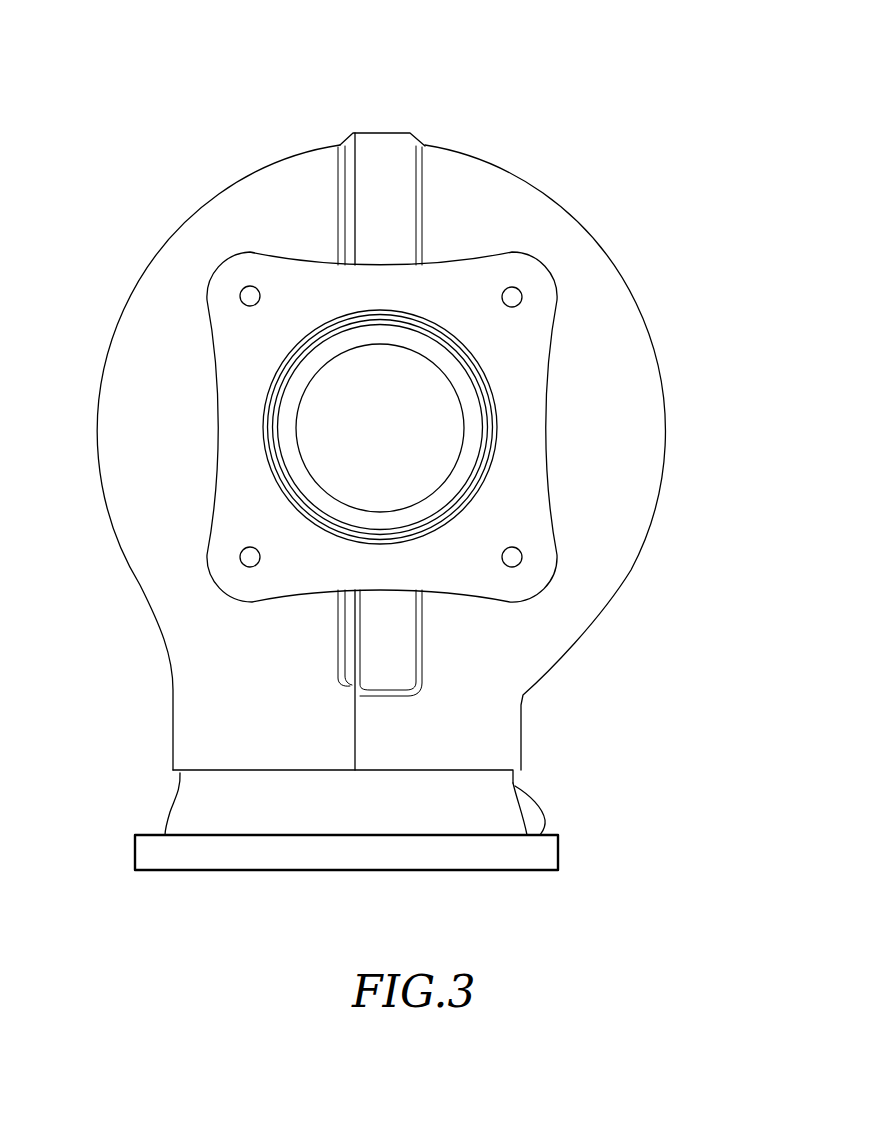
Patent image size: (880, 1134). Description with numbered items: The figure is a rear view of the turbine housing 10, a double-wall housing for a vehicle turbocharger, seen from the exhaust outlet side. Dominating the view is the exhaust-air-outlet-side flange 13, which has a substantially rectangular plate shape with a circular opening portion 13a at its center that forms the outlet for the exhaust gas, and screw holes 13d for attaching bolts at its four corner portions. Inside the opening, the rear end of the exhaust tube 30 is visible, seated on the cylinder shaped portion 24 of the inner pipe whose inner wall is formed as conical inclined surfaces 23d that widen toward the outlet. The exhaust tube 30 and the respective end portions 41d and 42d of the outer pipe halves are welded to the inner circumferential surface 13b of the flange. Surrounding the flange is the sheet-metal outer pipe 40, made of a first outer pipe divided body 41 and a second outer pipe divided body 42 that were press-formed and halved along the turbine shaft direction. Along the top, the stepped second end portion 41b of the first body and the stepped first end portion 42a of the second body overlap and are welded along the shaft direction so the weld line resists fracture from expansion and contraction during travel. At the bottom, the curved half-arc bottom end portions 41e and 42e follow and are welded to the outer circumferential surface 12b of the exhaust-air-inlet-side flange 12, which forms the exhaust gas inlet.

The turbine housing 10 is at (400, 469).
The exhaust-air-inlet-side flange 12 is at (323, 871).
The outer circumferential surface 12b is at (387, 780).
The exhaust-air-outlet-side flange 13 is at (218, 473).
The circular opening portion 13a is at (263, 436).
The inner circumferential surface 13b is at (296, 508).
The screw holes 13d is at (240, 295).
The cylinder shaped portion 24 is at (527, 428).
The inclined surfaces 23d is at (468, 390).
The exhaust tube 30 is at (498, 478).
The outer pipe 40 is at (381, 454).
The first outer pipe divided body 41 is at (180, 226).
The second end portion 41b is at (349, 138).
The end portion 41d is at (264, 416).
The bottom end portion 41e is at (233, 757).
The second outer pipe divided body 42 is at (551, 197).
The first end portion 42a is at (411, 132).
The end portion 42d is at (498, 425).
The bottom end portion 42e is at (468, 755).